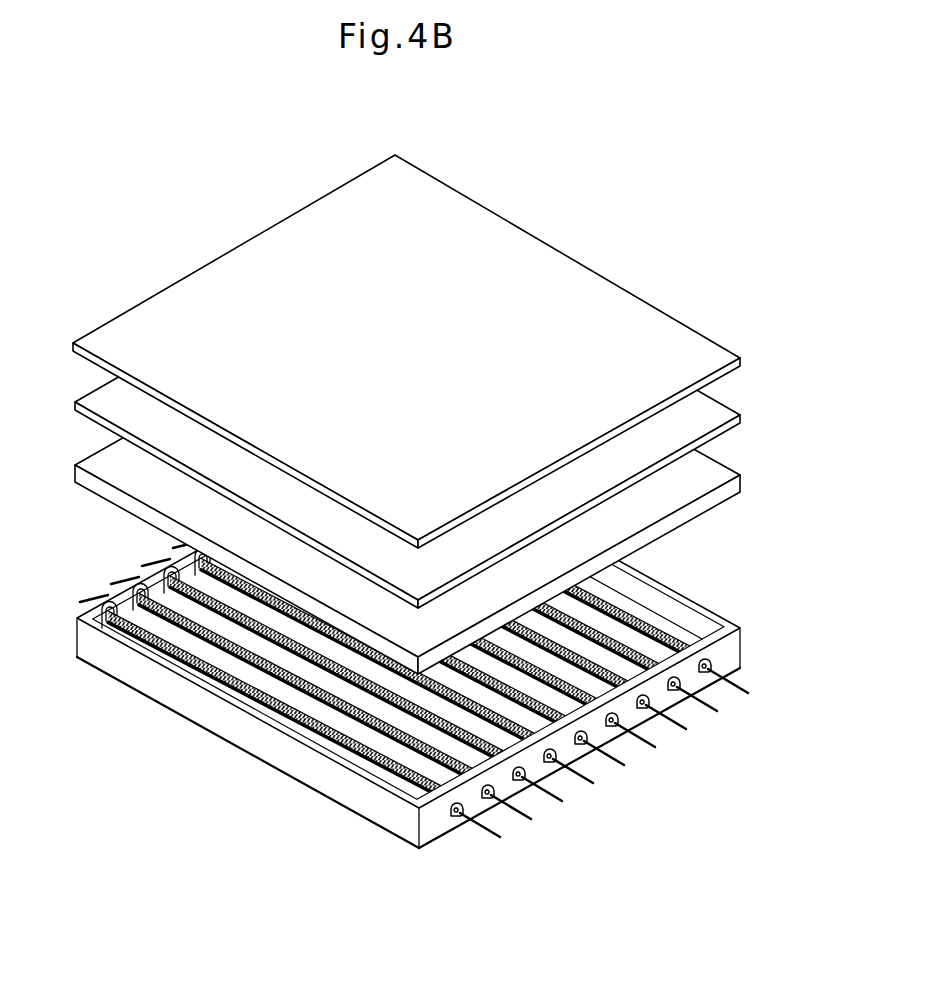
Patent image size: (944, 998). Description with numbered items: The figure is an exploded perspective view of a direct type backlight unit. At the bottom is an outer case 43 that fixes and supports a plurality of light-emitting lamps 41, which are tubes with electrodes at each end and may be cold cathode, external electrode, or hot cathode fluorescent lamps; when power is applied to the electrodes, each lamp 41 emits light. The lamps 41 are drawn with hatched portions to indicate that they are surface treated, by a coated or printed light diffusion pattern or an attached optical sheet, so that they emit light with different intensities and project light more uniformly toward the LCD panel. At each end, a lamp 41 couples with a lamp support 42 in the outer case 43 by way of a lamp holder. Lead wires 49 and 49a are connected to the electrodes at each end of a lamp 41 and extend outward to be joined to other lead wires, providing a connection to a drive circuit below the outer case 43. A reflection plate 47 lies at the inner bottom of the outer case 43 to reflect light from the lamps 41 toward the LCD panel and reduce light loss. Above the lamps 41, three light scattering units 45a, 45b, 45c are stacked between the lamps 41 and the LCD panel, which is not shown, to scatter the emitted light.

The light-emitting lamp 41 is at (285, 732).
The lamp support 42 is at (113, 633).
The outer case 43 is at (733, 652).
The light scattering unit 45a is at (744, 487).
The light scattering unit 45b is at (744, 416).
The light scattering unit 45c is at (744, 359).
The reflection plate 47 is at (372, 747).
The lead wire 49 is at (547, 792).
The lead wire 49a is at (85, 600).